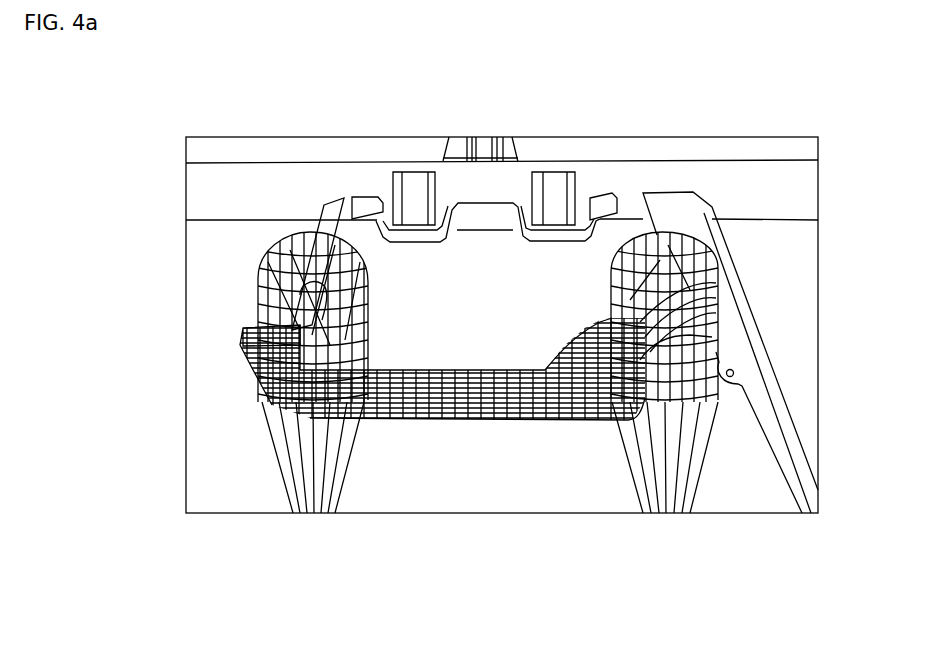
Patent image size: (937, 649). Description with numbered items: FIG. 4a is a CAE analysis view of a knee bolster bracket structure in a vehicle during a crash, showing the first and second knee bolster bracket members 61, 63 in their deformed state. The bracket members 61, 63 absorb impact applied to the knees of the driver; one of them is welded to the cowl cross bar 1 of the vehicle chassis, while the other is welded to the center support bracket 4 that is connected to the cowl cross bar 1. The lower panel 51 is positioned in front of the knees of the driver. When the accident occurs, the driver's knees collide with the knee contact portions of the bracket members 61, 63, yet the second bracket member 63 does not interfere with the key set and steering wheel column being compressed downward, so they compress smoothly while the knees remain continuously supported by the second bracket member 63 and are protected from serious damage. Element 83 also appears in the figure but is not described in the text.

The cowl cross bar 1 is at (716, 176).
The center support bracket 4 is at (790, 413).
The lower panel 51 is at (460, 410).
The first knee bolster bracket member 61 is at (265, 273).
The second knee bolster bracket member 63 is at (708, 338).
The support legs 83 is at (648, 487).